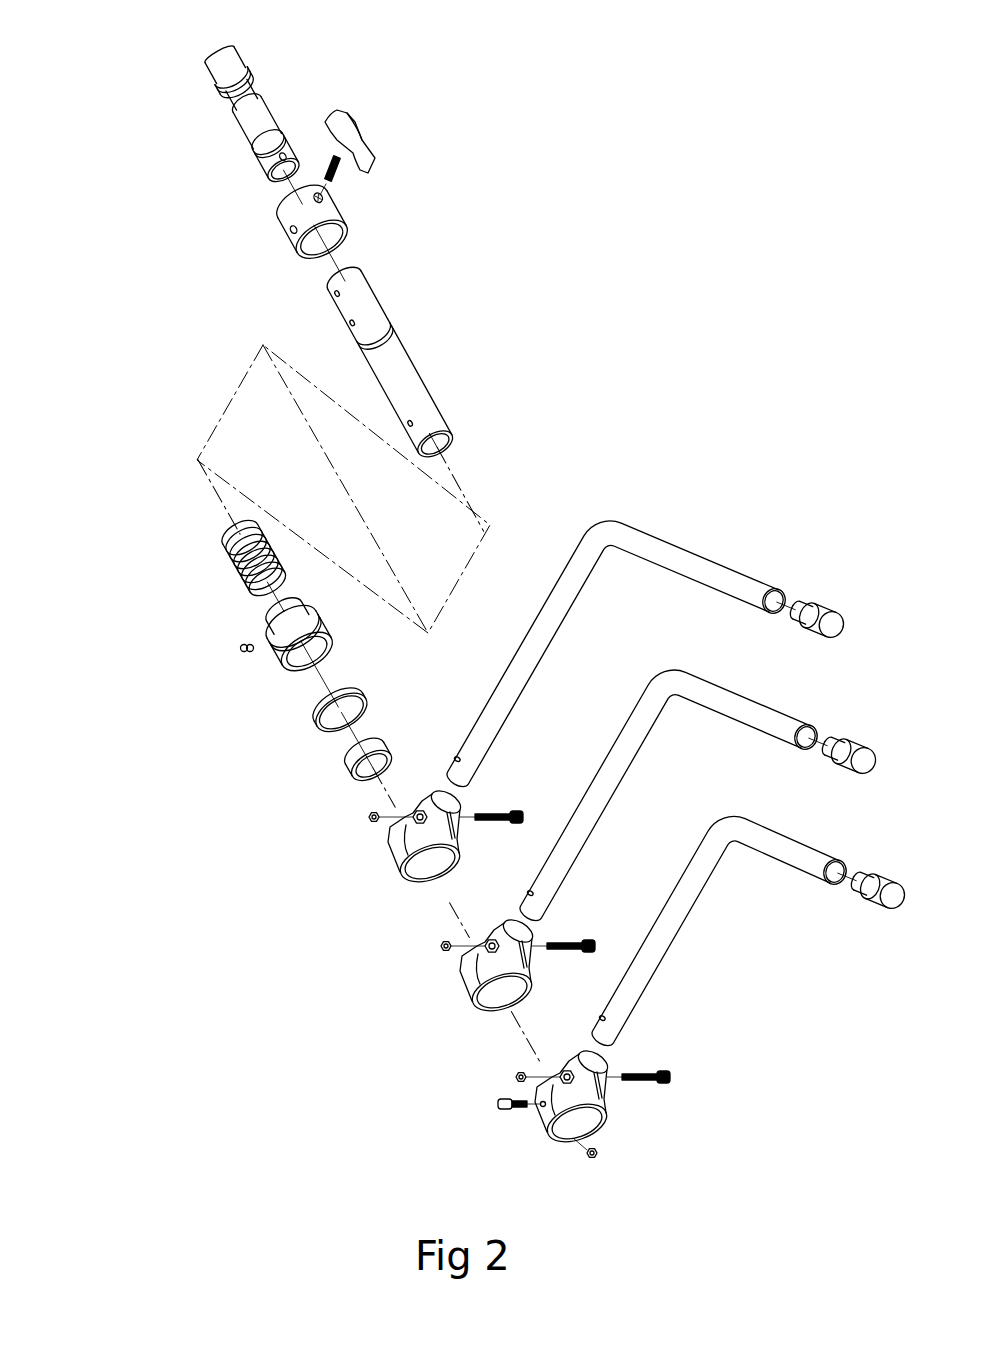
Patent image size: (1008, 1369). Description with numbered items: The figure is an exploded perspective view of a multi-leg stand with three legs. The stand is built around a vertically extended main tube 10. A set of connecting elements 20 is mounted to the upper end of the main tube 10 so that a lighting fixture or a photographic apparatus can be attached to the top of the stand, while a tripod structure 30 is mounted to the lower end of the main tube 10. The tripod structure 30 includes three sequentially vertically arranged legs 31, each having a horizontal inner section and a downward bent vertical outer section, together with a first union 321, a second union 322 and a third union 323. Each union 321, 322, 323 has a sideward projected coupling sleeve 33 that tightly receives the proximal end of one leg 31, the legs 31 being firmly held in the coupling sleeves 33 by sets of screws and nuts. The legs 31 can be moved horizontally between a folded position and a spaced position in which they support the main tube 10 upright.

The main tube 10 is at (452, 400).
The set of connecting elements 20 is at (386, 192).
The tripod structure 30 is at (238, 693).
The leg 31 is at (570, 584).
The coupling sleeve 33 is at (418, 815).
The first union 321 is at (390, 850).
The second union 322 is at (470, 982).
The third union 323 is at (535, 1117).